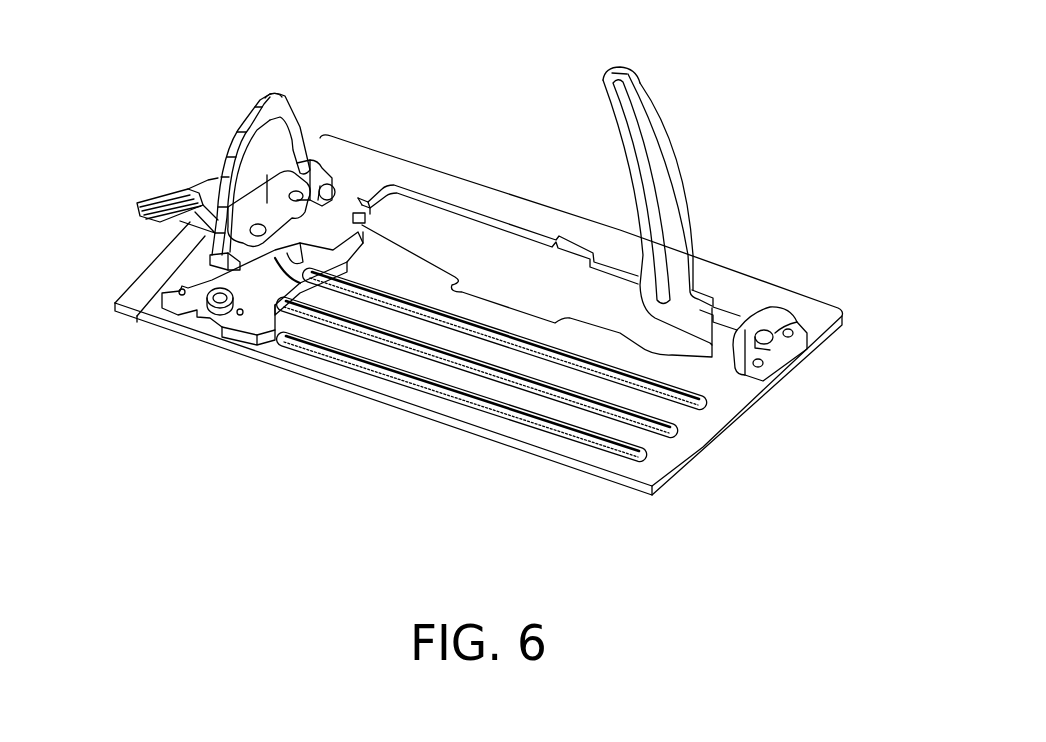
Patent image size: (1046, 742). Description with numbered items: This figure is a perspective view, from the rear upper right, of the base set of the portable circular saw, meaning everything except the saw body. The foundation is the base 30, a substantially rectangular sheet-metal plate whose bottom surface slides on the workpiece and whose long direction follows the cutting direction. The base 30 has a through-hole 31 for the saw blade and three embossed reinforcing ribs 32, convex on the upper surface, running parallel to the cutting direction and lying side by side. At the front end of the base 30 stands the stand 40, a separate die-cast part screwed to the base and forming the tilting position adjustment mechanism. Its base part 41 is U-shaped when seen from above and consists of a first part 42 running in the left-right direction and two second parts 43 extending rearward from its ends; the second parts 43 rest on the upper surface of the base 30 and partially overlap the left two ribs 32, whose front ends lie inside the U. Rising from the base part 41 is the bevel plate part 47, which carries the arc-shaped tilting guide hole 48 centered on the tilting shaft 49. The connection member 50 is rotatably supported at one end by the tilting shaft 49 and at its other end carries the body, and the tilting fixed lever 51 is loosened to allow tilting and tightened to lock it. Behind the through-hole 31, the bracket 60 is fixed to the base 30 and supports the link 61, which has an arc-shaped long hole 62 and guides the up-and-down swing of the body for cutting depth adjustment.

The base 30 is at (527, 457).
The through-hole 31 is at (442, 221).
The reinforcing ribs 32 is at (652, 458).
The stand 40 is at (180, 323).
The base part 41 is at (260, 411).
The first part 42 is at (236, 314).
The second parts 43 is at (260, 318).
The bevel plate part 47 is at (243, 122).
The tilting guide hole 48 is at (297, 113).
The tilting shaft 49 is at (331, 195).
The connection member 50 is at (315, 180).
The tilting fixed lever 51 is at (140, 208).
The bracket 60 is at (783, 312).
The link 61 is at (677, 190).
The arc-shaped long hole 62 is at (647, 140).